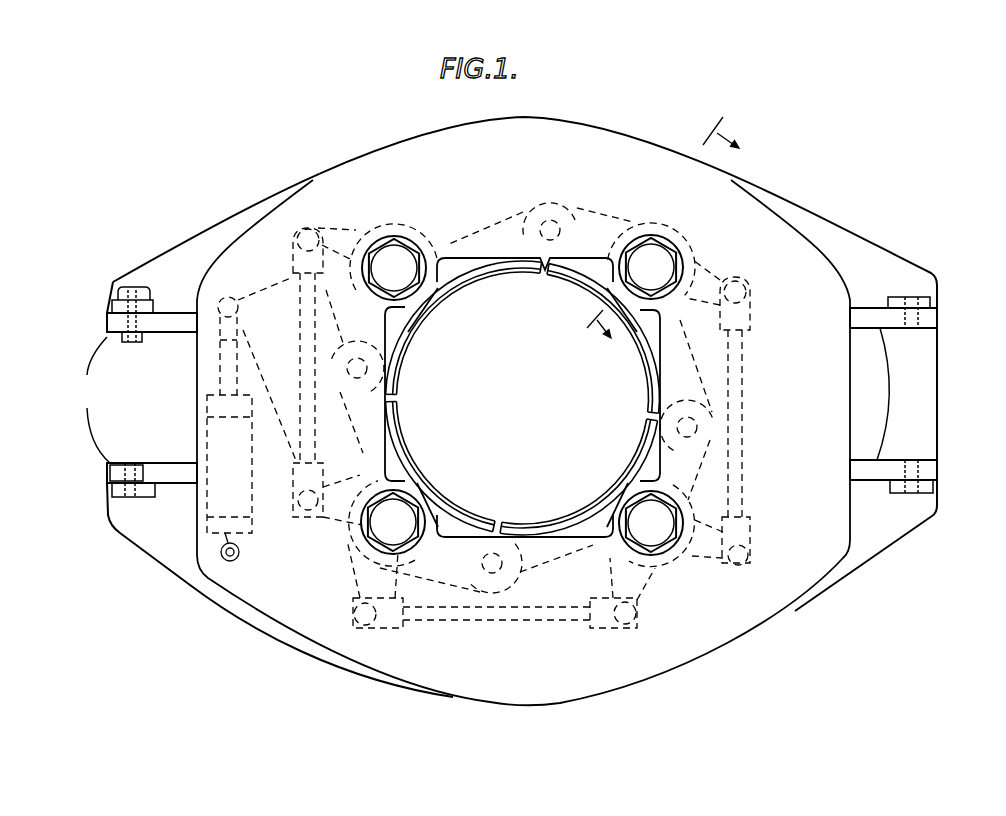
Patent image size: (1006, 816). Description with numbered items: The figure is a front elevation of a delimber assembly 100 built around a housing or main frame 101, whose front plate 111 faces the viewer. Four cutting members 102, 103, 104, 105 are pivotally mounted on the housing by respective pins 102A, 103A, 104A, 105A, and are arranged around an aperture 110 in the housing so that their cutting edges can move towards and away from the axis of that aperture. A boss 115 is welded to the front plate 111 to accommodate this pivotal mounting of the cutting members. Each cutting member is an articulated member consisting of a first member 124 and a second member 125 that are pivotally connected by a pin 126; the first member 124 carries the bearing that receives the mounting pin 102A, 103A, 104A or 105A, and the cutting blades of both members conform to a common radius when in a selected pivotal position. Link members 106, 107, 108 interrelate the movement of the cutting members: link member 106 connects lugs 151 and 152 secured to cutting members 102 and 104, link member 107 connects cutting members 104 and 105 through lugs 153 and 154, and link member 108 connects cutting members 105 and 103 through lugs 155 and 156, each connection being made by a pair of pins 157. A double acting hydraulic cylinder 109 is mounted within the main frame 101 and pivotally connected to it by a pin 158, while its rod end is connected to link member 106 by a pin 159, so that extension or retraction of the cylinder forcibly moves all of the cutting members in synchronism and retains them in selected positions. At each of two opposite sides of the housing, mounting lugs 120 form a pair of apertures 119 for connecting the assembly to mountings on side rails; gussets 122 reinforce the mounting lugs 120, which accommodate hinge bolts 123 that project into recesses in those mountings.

The delimber assembly 100 is at (830, 183).
The housing or main frame 101 is at (832, 265).
The cutting member 102 is at (397, 356).
The cutting member 103 is at (592, 284).
The cutting member 104 is at (483, 522).
The cutting member 105 is at (644, 461).
The pin 102A is at (410, 262).
The pin 103A is at (650, 266).
The pin 104A is at (398, 523).
The pin 105A is at (657, 543).
The link member 106 is at (300, 330).
The link member 107 is at (494, 622).
The link member 108 is at (734, 458).
The hydraulic cylinder 109 is at (218, 437).
The aperture 110 is at (442, 257).
The front plate 111 is at (788, 254).
The boss 115 is at (401, 262).
The aperture 119 is at (926, 330).
The mounting lug 120 is at (502, 395).
The gusset 122 is at (187, 262).
The hinge bolt 123 is at (113, 283).
The first member 124 is at (595, 262).
The second member 125 is at (483, 257).
The pin 126 is at (555, 225).
The lug 151 is at (340, 246).
The lug 152 is at (331, 529).
The lug 153 is at (360, 584).
The lug 154 is at (641, 592).
The lug 155 is at (733, 517).
The lug 156 is at (705, 278).
The pin 157 is at (310, 228).
The pin 158 is at (238, 562).
The pin 159 is at (191, 336).